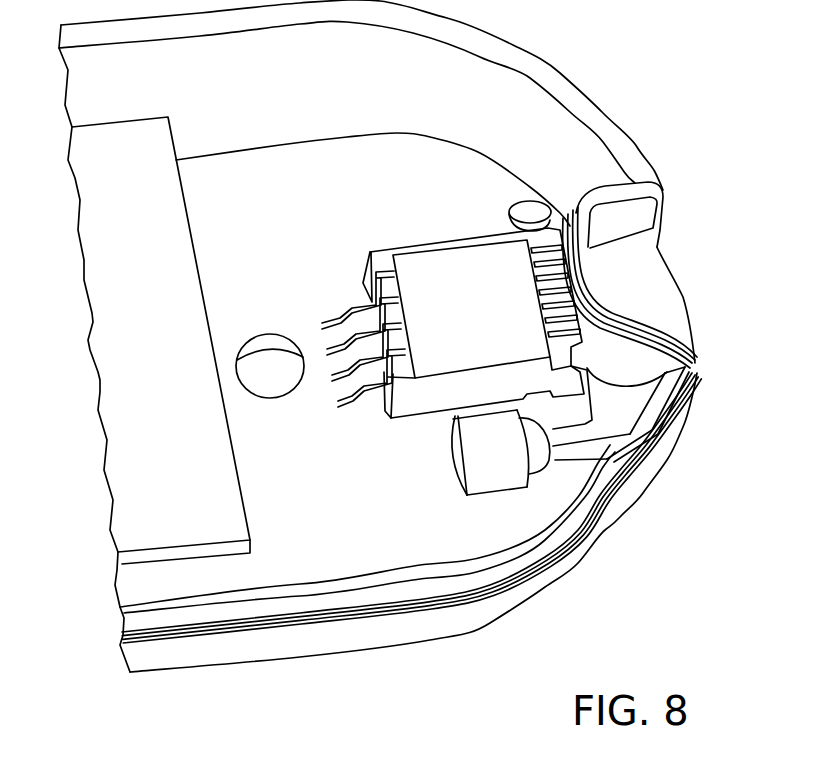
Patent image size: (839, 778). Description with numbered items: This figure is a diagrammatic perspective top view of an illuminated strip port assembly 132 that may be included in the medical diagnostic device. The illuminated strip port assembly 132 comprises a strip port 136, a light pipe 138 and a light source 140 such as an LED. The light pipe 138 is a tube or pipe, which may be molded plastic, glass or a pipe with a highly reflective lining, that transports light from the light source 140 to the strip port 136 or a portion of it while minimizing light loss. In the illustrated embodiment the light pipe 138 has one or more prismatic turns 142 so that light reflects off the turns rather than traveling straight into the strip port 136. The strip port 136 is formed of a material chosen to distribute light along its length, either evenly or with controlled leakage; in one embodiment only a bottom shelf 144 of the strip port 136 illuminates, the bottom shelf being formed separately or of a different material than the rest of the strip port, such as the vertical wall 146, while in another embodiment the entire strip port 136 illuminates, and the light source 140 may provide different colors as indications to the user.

The illuminated strip port assembly 132 is at (448, 336).
The strip port 136 is at (656, 255).
The light pipe 138 is at (610, 437).
The light source 140 is at (458, 475).
The prismatic turns 142 is at (650, 412).
The bottom shelf 144 is at (673, 317).
The vertical wall 146 is at (608, 218).